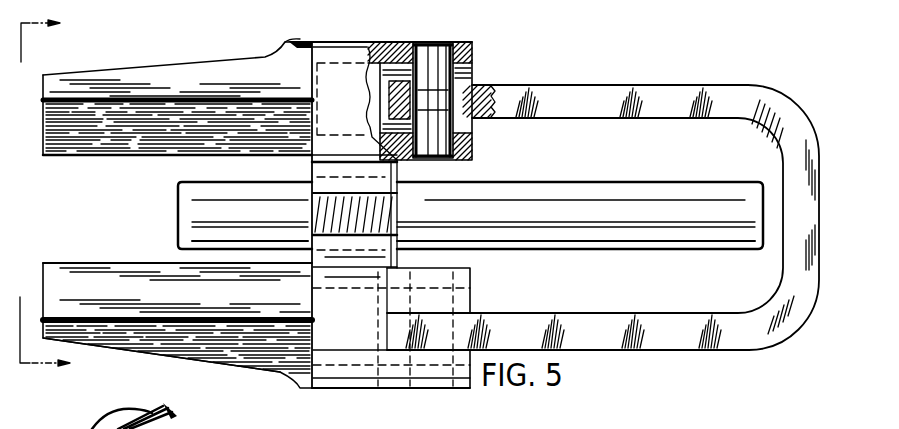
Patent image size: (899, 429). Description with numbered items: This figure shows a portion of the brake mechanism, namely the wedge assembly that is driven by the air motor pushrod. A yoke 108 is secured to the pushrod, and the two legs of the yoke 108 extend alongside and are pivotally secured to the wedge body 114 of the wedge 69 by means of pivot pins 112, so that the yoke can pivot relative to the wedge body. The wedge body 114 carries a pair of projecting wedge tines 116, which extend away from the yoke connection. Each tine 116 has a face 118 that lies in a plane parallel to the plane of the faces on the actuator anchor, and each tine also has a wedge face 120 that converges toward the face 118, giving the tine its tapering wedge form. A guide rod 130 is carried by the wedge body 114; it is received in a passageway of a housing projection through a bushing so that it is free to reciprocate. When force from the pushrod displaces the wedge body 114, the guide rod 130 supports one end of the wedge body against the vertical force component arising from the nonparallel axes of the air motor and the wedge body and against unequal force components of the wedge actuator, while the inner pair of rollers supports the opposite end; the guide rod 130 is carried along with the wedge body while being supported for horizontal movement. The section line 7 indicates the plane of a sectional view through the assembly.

The section line 7- 7 is at (54, 194).
The wedge 69 is at (264, 52).
The yoke 108 is at (556, 97).
The pivot pins 112 is at (452, 73).
The wedge body 114 is at (326, 44).
The wedge tines 116 is at (192, 77).
The face 118 is at (160, 133).
The wedge face 120 is at (185, 364).
The guide rod 130 is at (598, 180).